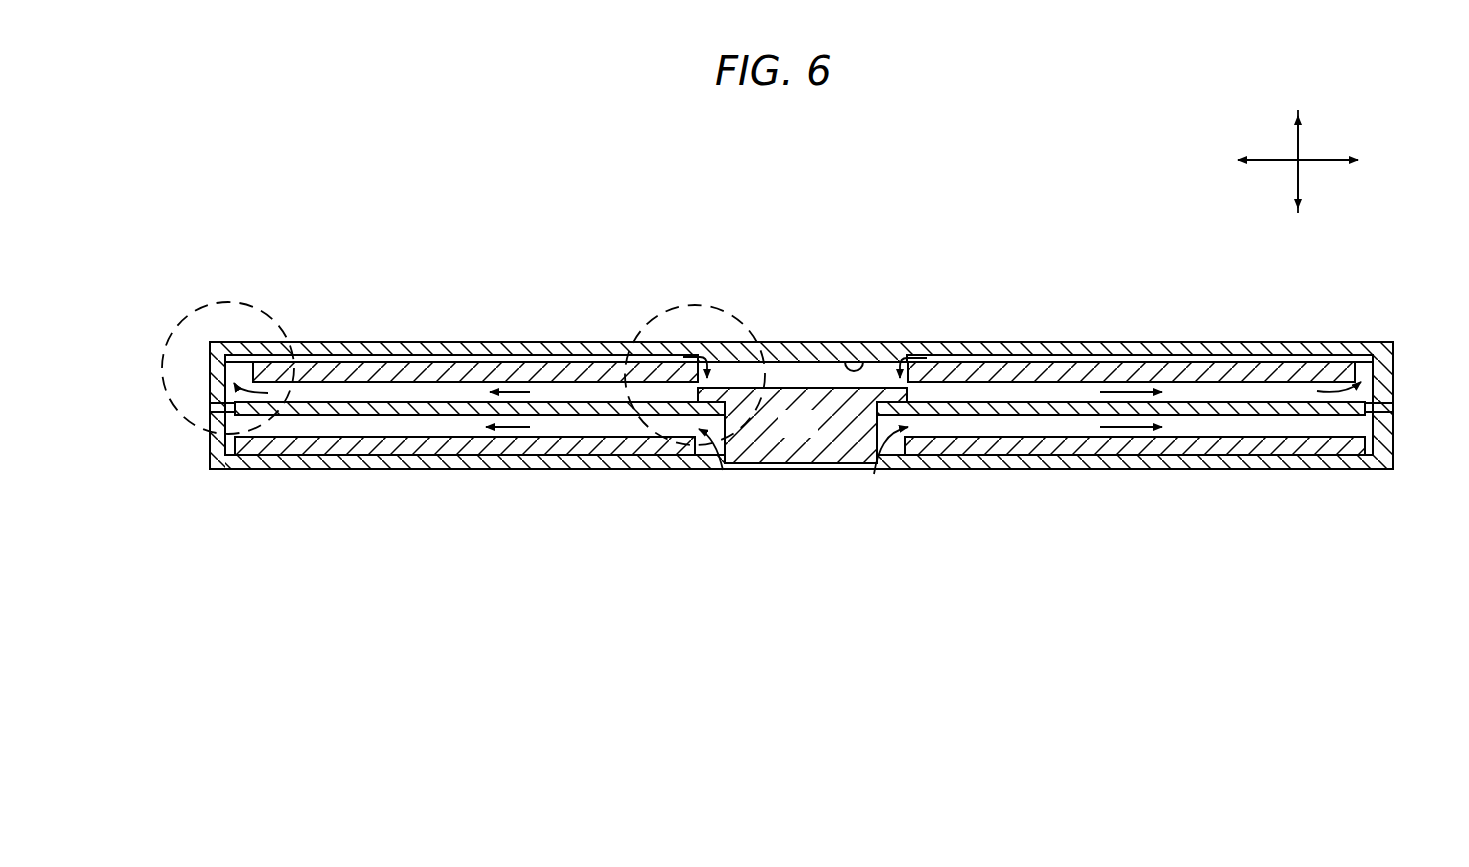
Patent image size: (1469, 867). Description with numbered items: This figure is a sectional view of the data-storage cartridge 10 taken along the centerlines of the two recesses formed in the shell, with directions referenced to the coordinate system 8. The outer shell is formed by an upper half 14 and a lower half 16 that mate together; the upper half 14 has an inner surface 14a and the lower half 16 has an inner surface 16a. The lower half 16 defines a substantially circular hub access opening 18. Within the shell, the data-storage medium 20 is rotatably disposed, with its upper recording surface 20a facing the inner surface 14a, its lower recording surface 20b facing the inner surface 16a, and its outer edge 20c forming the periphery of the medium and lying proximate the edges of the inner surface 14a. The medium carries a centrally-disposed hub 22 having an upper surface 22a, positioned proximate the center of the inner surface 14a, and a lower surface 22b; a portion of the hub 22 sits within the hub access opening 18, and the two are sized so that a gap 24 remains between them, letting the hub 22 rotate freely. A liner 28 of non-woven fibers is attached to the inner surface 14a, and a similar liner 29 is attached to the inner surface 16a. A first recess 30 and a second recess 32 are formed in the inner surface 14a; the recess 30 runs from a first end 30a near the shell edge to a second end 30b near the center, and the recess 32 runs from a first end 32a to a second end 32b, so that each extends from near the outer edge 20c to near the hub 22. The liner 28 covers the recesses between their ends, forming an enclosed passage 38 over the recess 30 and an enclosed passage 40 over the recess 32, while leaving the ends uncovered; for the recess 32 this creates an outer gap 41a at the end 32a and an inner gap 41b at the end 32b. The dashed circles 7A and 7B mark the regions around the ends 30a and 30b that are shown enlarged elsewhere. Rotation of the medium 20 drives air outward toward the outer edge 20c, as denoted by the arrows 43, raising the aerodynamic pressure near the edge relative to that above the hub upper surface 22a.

The data-storage cartridge 10 is at (298, 185).
The coordinate system 8 is at (1305, 152).
The detail region of FIG. 7A is at (258, 308).
The detail region of FIG. 7B is at (734, 310).
The upper half 14 is at (1392, 355).
The inner surface 14a is at (864, 366).
The lower half 16 is at (1383, 470).
The inner surface 16a is at (225, 445).
The hub access opening 18 is at (797, 492).
The data-storage medium 20 is at (1035, 402).
The upper recording surface 20a is at (287, 400).
The lower recording surface 20b is at (303, 416).
The outer edge 20c is at (210, 409).
The hub 22 is at (812, 436).
The upper surface 22a is at (787, 387).
The lower surface 22b is at (820, 468).
The gap 24 is at (705, 445).
The liner 28 is at (430, 370).
The liner 29 is at (280, 450).
The first recess 30 is at (435, 350).
The first end 30a is at (223, 342).
The second end 30b is at (717, 361).
The second recess 32 is at (1005, 350).
The first end 32a is at (1375, 362).
The second end 32b is at (900, 360).
The enclosed passage 38 is at (575, 355).
The enclosed passage 40 is at (1185, 352).
The outer gap 41a is at (1365, 366).
The inner gap 41b is at (978, 350).
The arrows 43 is at (560, 492).